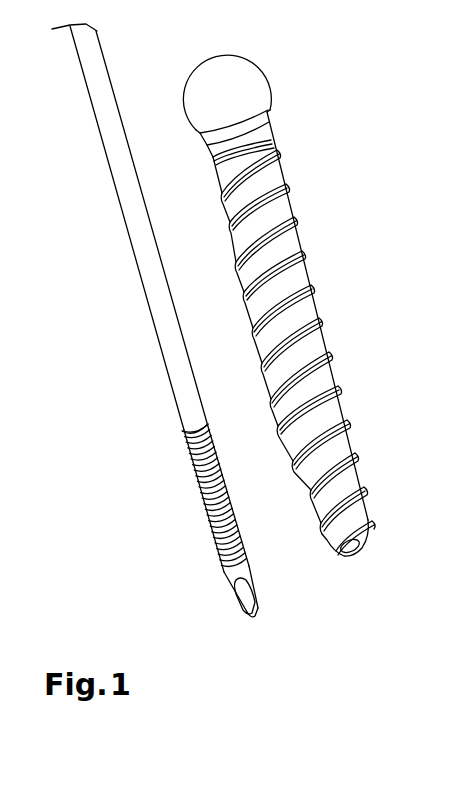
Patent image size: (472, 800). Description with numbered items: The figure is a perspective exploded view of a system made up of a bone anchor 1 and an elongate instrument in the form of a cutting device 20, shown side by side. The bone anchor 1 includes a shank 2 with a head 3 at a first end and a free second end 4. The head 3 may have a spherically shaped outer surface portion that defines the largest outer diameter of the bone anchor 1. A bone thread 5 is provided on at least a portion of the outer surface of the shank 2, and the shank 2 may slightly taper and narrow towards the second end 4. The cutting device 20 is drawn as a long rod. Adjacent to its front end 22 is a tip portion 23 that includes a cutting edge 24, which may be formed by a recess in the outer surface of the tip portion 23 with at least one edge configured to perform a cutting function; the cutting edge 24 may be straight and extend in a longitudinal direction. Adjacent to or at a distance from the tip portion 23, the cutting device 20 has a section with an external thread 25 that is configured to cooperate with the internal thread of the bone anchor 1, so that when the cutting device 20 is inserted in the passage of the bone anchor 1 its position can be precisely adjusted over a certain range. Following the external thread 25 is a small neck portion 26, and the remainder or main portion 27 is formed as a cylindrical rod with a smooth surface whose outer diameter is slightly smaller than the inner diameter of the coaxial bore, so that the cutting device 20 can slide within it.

The bone anchor 1 is at (329, 198).
The shank 2 is at (311, 300).
The head 3 is at (267, 78).
The free second end 4 is at (362, 552).
The bone thread 5 is at (285, 184).
The cutting device 20 is at (120, 312).
The front end 22 is at (255, 617).
The tip portion 23 is at (227, 578).
The cutting edge 24 is at (238, 607).
The external thread 25 is at (201, 500).
The neck portion 26 is at (188, 433).
The main portion 27 is at (163, 347).